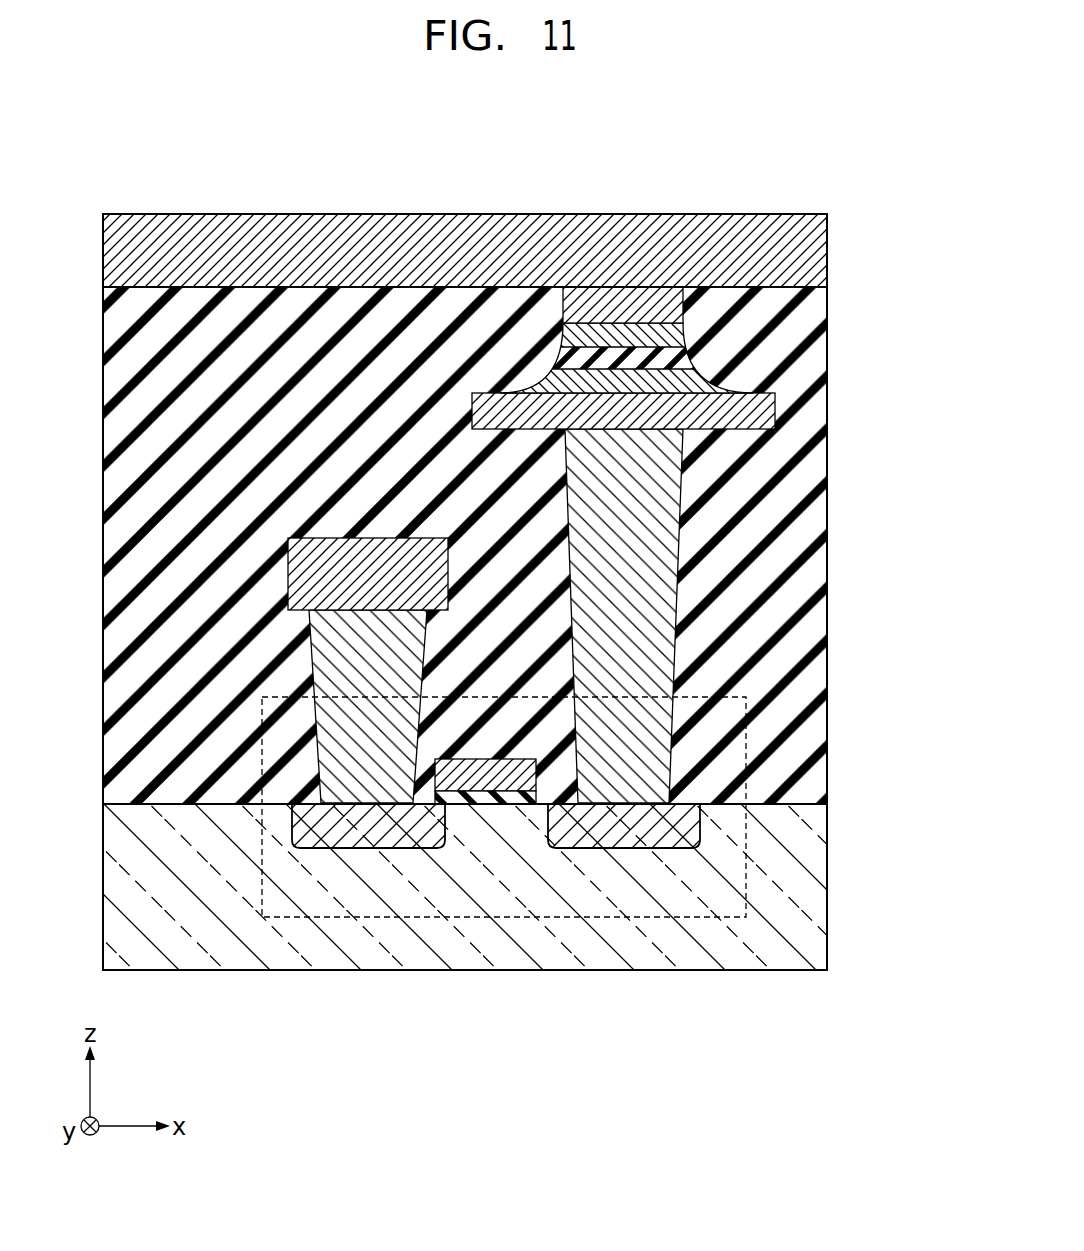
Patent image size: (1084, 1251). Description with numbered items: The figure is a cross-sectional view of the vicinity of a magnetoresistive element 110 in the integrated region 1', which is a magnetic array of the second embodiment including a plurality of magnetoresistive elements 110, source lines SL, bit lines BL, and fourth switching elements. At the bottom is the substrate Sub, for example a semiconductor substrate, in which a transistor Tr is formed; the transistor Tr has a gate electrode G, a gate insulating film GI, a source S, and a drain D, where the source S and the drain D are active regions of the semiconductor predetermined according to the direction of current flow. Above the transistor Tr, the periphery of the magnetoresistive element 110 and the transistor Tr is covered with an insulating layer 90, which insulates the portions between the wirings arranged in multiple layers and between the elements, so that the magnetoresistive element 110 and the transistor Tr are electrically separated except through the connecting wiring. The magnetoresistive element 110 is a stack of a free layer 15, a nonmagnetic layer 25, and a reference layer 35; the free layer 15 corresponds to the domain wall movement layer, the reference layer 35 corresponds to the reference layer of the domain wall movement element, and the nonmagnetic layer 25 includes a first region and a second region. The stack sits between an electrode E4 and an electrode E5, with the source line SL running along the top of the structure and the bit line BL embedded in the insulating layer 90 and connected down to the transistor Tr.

The integrated region 1' is at (797, 145).
The source line SL is at (253, 246).
The fourth electrode E4 is at (618, 305).
The free layer 15 is at (673, 338).
The nonmagnetic layer 25 is at (687, 360).
The reference layer 35 is at (720, 383).
The magnetoresistive element 110 is at (719, 341).
The fifth electrode E5 is at (757, 413).
The insulating layer 90 is at (165, 372).
The bit line BL is at (308, 578).
The substrate Sub is at (803, 898).
The transistor Tr is at (300, 917).
The source S is at (397, 838).
The gate insulating film GI is at (467, 800).
The gate electrode G is at (503, 778).
The drain D is at (643, 840).